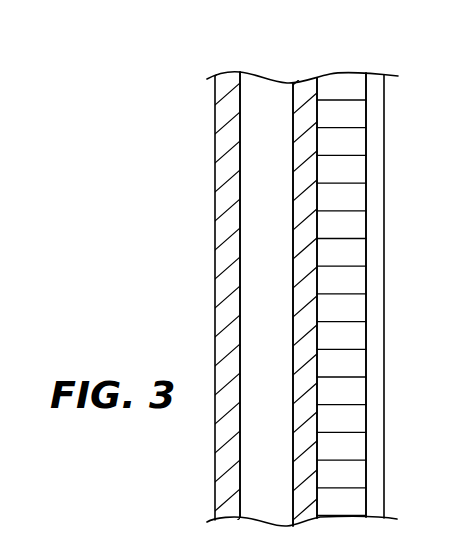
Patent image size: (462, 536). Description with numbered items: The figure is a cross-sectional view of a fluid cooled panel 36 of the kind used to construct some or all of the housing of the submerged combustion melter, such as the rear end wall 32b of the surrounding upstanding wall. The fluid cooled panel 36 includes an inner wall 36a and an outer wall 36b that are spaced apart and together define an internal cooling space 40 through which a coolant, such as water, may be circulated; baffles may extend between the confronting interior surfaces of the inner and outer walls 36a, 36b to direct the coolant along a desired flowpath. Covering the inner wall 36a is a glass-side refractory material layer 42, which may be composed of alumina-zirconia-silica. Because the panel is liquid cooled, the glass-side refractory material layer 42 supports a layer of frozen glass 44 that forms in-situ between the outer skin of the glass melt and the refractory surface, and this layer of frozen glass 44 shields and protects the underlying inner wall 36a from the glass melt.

The fluid cooled panel 36 is at (192, 70).
The inner wall 36a is at (300, 458).
The outer wall 36b is at (218, 459).
The internal cooling space 40 is at (243, 253).
The glass-side refractory material layer 42 is at (347, 388).
The layer of frozen glass 44 is at (373, 292).
The rear end wall 32b is at (0, 215).